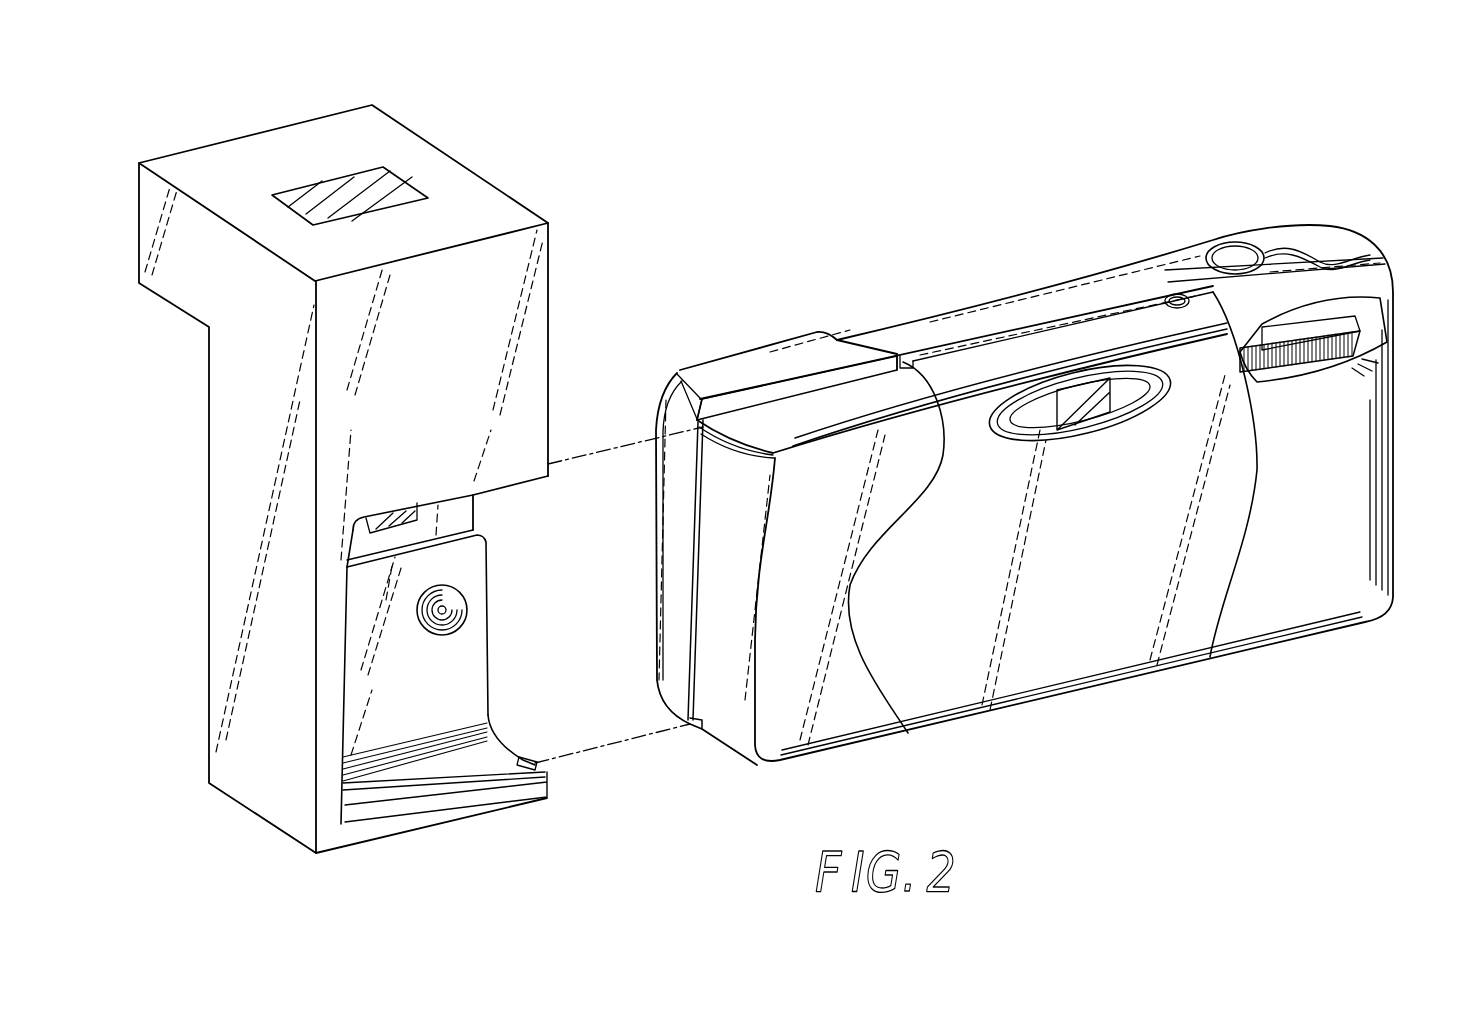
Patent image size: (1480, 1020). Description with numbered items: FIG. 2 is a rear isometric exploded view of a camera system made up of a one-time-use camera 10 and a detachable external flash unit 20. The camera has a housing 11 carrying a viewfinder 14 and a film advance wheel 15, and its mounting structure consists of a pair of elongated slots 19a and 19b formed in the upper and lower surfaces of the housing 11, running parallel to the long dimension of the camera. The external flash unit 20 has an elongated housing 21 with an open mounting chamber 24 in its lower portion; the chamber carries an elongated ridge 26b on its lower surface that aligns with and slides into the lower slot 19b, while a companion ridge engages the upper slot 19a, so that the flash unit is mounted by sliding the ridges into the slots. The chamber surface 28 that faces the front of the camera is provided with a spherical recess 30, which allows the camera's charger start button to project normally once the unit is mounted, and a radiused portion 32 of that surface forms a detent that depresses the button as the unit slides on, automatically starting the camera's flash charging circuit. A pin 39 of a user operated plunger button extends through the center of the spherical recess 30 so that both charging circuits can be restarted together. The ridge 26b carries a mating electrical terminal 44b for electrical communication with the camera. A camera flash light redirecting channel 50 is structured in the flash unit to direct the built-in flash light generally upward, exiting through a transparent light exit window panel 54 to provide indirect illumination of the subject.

The one-time-use camera 10 is at (1052, 444).
The camera housing 11 is at (1190, 250).
The viewfinder 14 is at (1087, 400).
The film advance wheel 15 is at (1357, 340).
The elongated slot 19a is at (742, 398).
The elongated slot 19b is at (702, 733).
The external flash unit 20 is at (413, 479).
The elongated housing 21 is at (548, 328).
The open mounting chamber 24 is at (503, 486).
The elongated ridge 26b is at (491, 769).
The chamber surface 28 is at (447, 690).
The spherical recess 30 is at (480, 620).
The radiused portion 32 is at (491, 567).
The pin 39 is at (446, 608).
The electrical terminal 44b is at (527, 759).
The camera flash light redirecting channel 50 is at (412, 519).
The transparent light exit window panel 54 is at (390, 183).